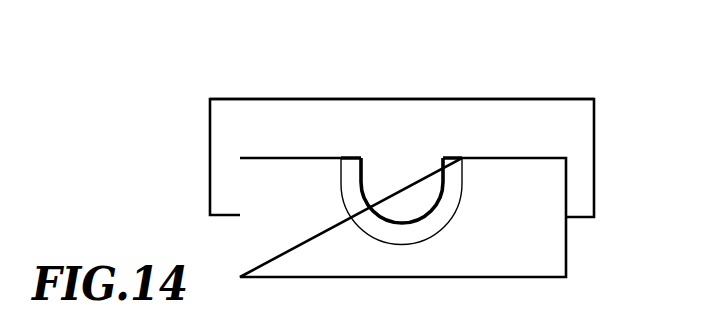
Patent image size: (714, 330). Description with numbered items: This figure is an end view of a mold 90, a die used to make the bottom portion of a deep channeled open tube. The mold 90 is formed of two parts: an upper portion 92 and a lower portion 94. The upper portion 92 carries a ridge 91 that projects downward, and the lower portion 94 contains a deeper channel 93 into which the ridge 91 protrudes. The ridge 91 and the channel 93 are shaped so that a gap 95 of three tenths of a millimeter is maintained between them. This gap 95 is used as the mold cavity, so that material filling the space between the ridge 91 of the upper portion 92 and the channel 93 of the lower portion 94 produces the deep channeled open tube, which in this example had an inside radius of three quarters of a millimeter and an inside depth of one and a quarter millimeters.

The mold 90 is at (500, 93).
The ridge 91 is at (395, 195).
The upper portion 92 is at (556, 103).
The channel 93 is at (396, 242).
The lower portion 94 is at (521, 268).
The gap 95 is at (431, 224).